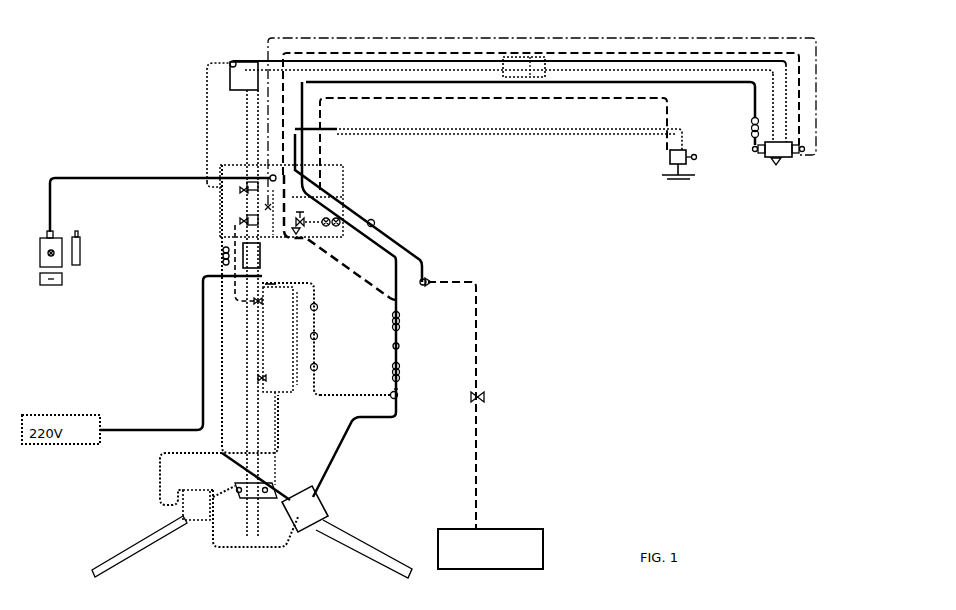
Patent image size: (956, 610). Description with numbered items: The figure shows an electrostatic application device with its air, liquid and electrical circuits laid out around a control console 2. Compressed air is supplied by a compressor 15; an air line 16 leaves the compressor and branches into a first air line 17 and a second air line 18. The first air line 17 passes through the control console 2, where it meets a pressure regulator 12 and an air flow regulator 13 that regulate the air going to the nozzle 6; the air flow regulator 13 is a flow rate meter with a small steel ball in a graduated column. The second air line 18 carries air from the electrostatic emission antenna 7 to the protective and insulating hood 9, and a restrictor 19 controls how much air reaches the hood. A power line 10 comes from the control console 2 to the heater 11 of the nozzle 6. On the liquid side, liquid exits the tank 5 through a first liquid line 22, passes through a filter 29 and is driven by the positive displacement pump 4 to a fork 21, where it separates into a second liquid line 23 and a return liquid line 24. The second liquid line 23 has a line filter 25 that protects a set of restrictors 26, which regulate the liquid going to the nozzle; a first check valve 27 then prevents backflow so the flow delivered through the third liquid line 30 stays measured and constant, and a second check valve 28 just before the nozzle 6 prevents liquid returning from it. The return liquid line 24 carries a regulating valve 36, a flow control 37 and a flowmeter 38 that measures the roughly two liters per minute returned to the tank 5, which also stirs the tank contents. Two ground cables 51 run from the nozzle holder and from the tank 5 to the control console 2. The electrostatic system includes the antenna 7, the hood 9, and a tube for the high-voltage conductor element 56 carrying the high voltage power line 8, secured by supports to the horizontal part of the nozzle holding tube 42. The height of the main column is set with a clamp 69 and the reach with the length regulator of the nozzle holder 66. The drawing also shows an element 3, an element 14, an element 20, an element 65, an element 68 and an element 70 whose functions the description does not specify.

The control console 2 is at (233, 173).
The remote control device 3 is at (62, 264).
The positive displacement pump 4 is at (317, 515).
The tank 5 is at (291, 339).
The nozzle 6 is at (776, 167).
The electrostatic emission antenna 7 is at (678, 178).
The high voltage power line 8 is at (526, 135).
The protective and insulating hood 9 is at (687, 158).
The power line 10 is at (677, 38).
The heater 11 is at (784, 151).
The pressure regulator 12 is at (327, 219).
The air flow regulator 13 is at (306, 214).
The valve 14 is at (296, 226).
The compressor 15 is at (490, 549).
The air line 16 is at (478, 485).
The first air line 17 is at (616, 52).
The second air line 18 is at (405, 246).
The restrictor 19 is at (375, 222).
The valve 20 is at (486, 394).
The fork 21 is at (408, 397).
The first liquid line 22 is at (160, 470).
The second liquid line 23 is at (398, 391).
The return liquid line 24 is at (355, 386).
The line filter 25 is at (401, 370).
The set of restrictors 26 is at (400, 346).
The first check valve 27 is at (401, 320).
The second check valve 28 is at (750, 125).
The filter 29 is at (196, 505).
The third liquid line 30 is at (398, 276).
The regulating valve 36 is at (320, 367).
The flow control 37 is at (320, 336).
The flowmeter 38 is at (320, 307).
The nozzle holding tube 42 is at (778, 110).
The ground cables 51 is at (218, 62).
The tube for the high-voltage conductor element 56 is at (593, 136).
The arm 65 is at (163, 536).
The length regulator of the nozzle holder 66 is at (522, 66).
The pump 68 is at (250, 258).
The clamp 69 is at (258, 378).
The bracket 70 is at (263, 490).